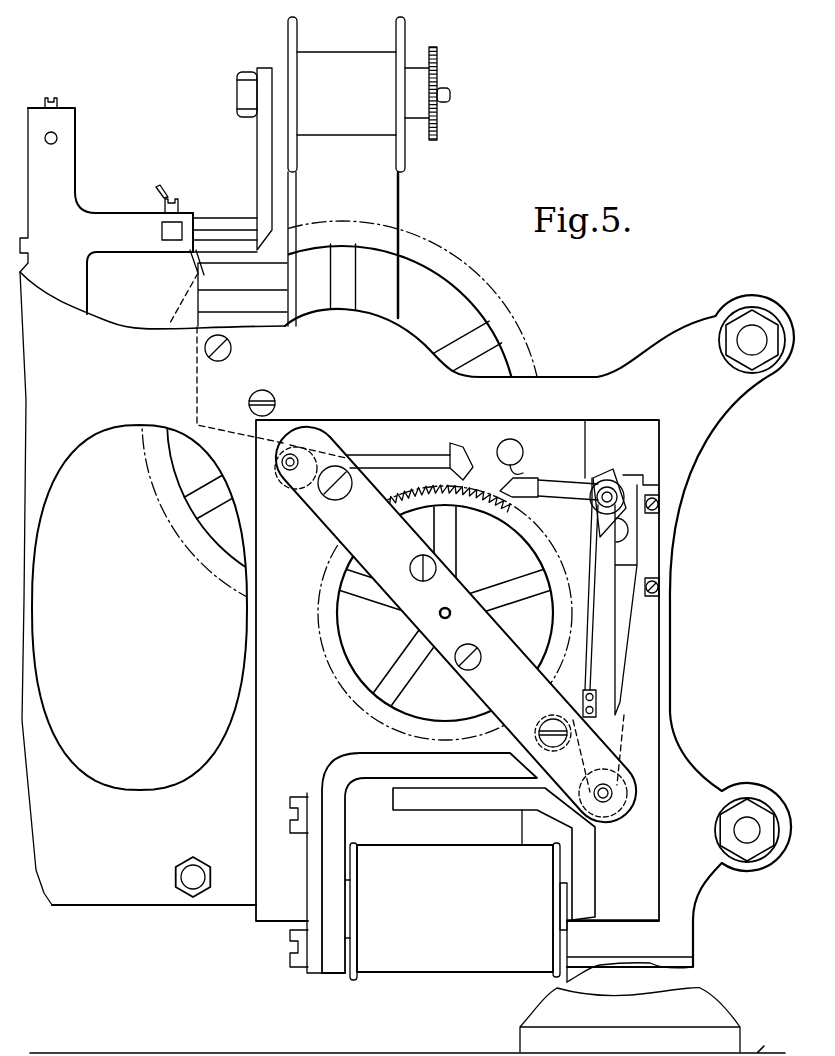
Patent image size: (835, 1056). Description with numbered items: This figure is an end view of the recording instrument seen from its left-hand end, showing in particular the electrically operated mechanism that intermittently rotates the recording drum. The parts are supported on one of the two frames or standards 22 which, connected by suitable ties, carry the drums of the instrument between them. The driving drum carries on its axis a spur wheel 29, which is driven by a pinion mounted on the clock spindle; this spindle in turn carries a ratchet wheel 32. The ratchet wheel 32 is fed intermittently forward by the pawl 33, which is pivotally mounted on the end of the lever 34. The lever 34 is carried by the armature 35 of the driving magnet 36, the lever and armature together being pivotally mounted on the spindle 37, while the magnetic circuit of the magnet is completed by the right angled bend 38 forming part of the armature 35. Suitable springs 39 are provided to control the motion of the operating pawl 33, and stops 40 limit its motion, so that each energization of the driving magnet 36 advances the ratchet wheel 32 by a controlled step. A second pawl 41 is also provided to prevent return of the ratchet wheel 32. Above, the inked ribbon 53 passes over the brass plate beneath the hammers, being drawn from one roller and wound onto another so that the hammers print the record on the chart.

The frame 22 is at (670, 332).
The spur wheel 29 is at (477, 278).
The ratchet wheel 32 is at (547, 540).
The pawl 33 is at (563, 496).
The lever 34 is at (592, 548).
The armature 35 is at (588, 886).
The driving magnet 36 is at (450, 855).
The spindle 37 is at (608, 800).
The right angled bend 38 is at (353, 763).
The springs 39 is at (632, 636).
The stops 40 is at (523, 473).
The second pawl 41 is at (449, 444).
The inked ribbon 53 is at (380, 202).